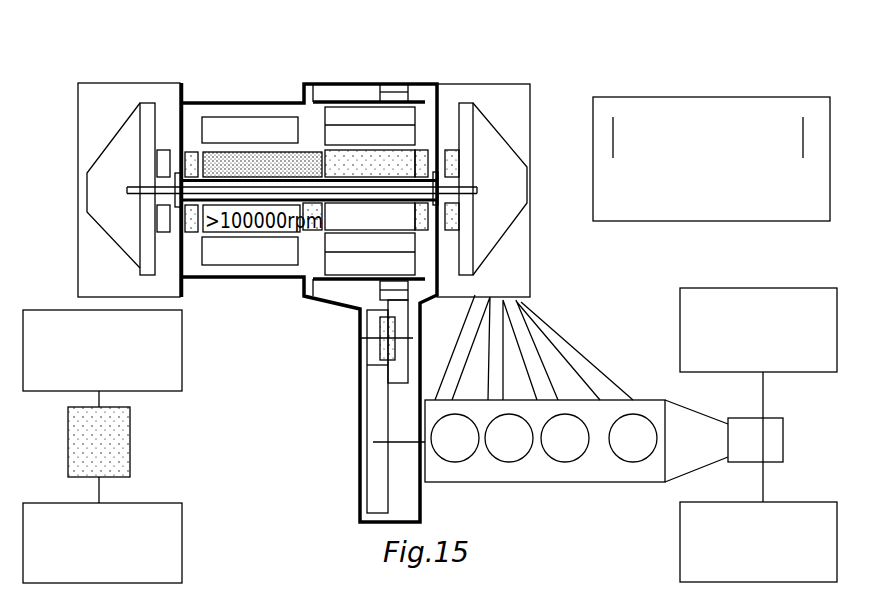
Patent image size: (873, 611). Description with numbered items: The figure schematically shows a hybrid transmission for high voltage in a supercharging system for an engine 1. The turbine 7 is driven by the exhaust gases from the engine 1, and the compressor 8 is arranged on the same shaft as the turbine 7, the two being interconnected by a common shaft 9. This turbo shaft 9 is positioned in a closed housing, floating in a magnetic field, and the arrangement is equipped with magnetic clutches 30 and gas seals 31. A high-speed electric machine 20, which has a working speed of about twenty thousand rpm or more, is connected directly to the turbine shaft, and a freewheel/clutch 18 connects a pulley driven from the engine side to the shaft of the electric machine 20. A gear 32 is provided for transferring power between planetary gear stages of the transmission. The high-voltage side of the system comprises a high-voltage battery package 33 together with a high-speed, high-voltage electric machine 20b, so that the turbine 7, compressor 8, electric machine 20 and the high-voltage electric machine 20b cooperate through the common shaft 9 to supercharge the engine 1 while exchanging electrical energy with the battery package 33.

The engine 1 is at (528, 483).
The turbine 7 is at (490, 132).
The compressor 8 is at (127, 140).
The shaft 9 is at (302, 180).
The freewheel/clutch 18 is at (383, 345).
The electric machine 20 is at (238, 128).
The high-speed, high-voltage electric machine 20b is at (128, 435).
The magnetic clutches 30 is at (162, 150).
The gas seals 31 is at (183, 267).
The gear 32 is at (378, 407).
The high-voltage battery package 33 is at (698, 102).